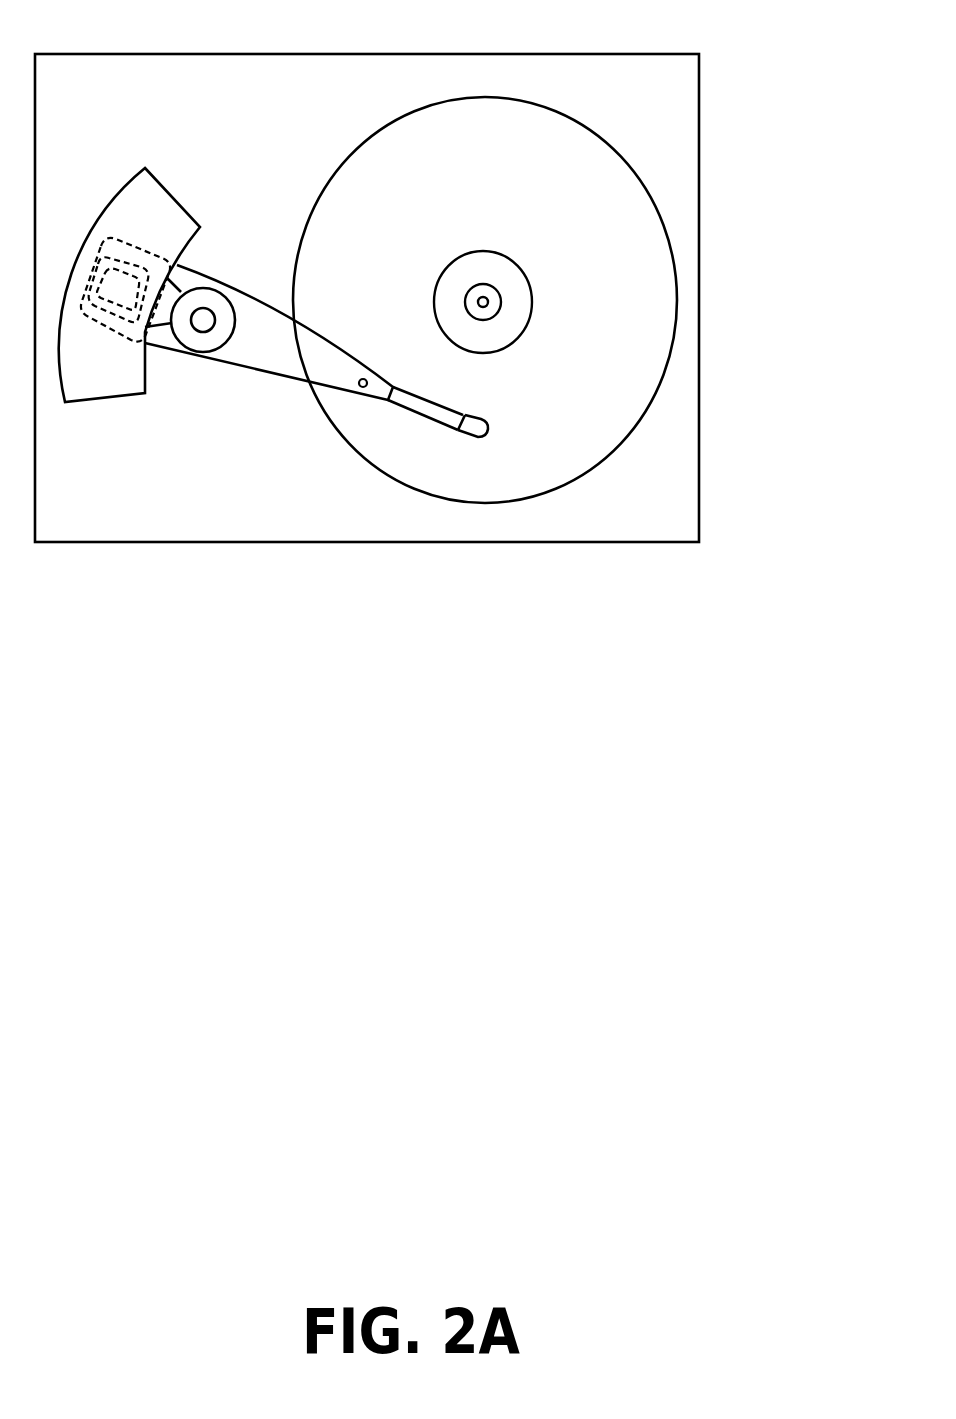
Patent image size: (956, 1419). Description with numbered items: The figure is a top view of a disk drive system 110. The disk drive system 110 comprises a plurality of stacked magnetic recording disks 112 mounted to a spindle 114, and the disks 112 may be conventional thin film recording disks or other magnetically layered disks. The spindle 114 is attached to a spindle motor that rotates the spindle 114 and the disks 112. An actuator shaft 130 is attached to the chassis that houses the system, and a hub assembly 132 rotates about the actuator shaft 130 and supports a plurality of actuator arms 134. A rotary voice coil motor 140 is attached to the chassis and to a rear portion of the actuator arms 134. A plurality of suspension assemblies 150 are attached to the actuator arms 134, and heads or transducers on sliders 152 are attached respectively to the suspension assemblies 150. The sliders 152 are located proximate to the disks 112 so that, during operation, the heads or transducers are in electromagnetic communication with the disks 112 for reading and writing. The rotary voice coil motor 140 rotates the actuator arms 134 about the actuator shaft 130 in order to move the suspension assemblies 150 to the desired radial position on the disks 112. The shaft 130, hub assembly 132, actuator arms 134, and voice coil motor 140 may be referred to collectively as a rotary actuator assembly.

The disk drive system 110 is at (752, 173).
The magnetic recording disks 112 is at (520, 185).
The spindle 114 is at (487, 287).
The actuator shaft 130 is at (193, 334).
The hub assembly 132 is at (228, 282).
The actuator arms 134 is at (307, 343).
The rotary voice coil motor 140 is at (147, 207).
The suspension assemblies 150 is at (407, 398).
The sliders 152 is at (488, 428).